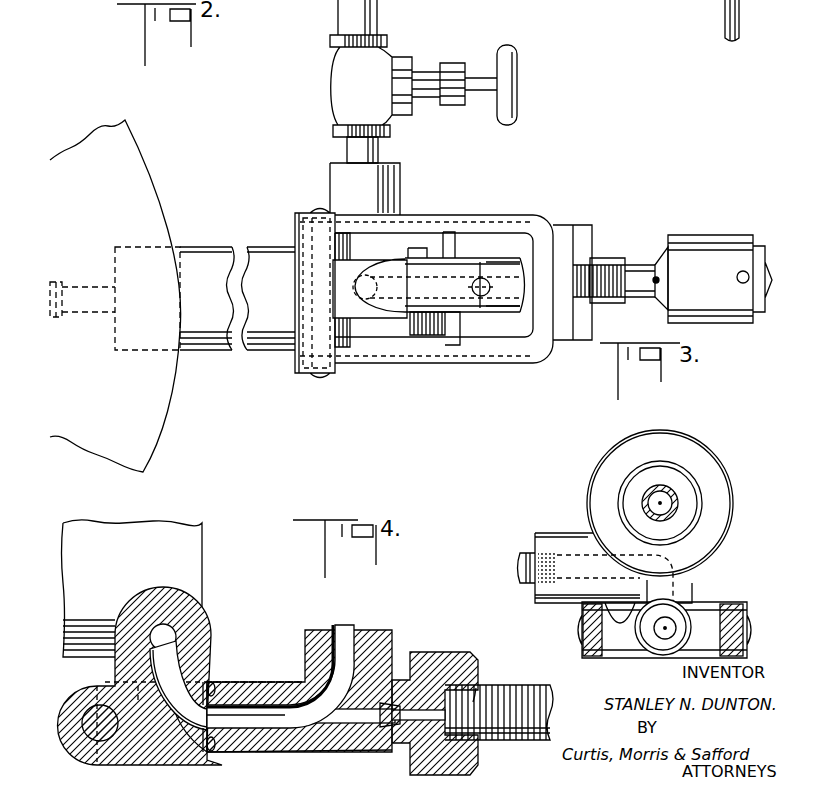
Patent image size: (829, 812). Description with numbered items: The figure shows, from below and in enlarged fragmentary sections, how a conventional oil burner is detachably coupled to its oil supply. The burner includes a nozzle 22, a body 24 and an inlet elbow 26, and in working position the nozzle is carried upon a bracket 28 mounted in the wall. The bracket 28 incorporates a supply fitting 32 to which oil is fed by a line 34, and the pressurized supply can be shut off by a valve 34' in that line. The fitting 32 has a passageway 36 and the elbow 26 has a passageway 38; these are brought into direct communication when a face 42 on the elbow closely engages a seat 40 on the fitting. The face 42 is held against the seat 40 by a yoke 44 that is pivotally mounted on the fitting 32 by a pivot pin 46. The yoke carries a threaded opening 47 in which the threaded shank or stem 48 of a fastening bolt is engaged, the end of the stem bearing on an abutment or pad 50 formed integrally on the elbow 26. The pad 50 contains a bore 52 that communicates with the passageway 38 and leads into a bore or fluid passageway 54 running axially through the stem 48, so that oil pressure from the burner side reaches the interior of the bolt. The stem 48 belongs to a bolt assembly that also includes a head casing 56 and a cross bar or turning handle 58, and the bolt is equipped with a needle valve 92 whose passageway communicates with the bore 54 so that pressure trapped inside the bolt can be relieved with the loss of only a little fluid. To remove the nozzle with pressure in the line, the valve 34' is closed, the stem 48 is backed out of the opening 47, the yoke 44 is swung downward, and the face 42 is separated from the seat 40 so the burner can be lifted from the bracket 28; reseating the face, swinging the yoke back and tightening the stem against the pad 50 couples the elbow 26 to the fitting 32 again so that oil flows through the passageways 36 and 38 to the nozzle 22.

In FIG. 2, the nozzle 22 is at (96, 313).
In FIG. 3, the nozzle 22 is at (680, 513).
In FIG. 2, the body 24 is at (573, 225).
In FIG. 2, the inlet elbow 26 is at (425, 262).
In FIG. 4, the inlet elbow 26 is at (307, 640).
In FIG. 2, the bracket 28 is at (247, 352).
In FIG. 3, the bracket 28 is at (697, 488).
In FIG. 2, the supply fitting 32 is at (386, 318).
In FIG. 3, the supply fitting 32 is at (562, 532).
In FIG. 4, the supply fitting 32 is at (186, 702).
In FIG. 2, the line 34 is at (330, 150).
In FIG. 3, the line 34 is at (523, 549).
In FIG. 2, the valve 34' is at (400, 68).
In FIG. 3, the passageway 36 is at (588, 570).
In FIG. 4, the passageway 36 is at (165, 725).
In FIG. 2, the passageway 38 is at (460, 275).
In FIG. 3, the passageway 38 is at (672, 633).
In FIG. 4, the passageway 38 is at (283, 716).
In FIG. 3, the seat 40 is at (653, 647).
In FIG. 4, the seat 40 is at (213, 682).
In FIG. 4, the face 42 is at (220, 684).
In FIG. 2, the yoke 44 is at (478, 363).
In FIG. 3, the yoke 44 is at (752, 640).
In FIG. 4, the yoke 44 is at (302, 755).
In FIG. 2, the pivot pin 46 is at (318, 207).
In FIG. 3, the pivot pin 46 is at (747, 613).
In FIG. 4, the pivot pin 46 is at (90, 738).
In FIG. 4, the threaded opening 47 is at (476, 690).
In FIG. 2, the threaded shank or stem 48 is at (648, 302).
In FIG. 4, the threaded shank or stem 48 is at (521, 742).
In FIG. 2, the abutment or pad 50 is at (486, 280).
In FIG. 4, the abutment or pad 50 is at (386, 720).
In FIG. 2, the bore 52 is at (520, 280).
In FIG. 4, the bore 52 is at (356, 722).
In FIG. 4, the bore or fluid passageway 54 is at (395, 735).
In FIG. 2, the head casing 56 is at (742, 316).
In FIG. 2, the cross bar or turning handle 58 is at (748, 274).
In FIG. 2, the needle valve 92 is at (661, 252).